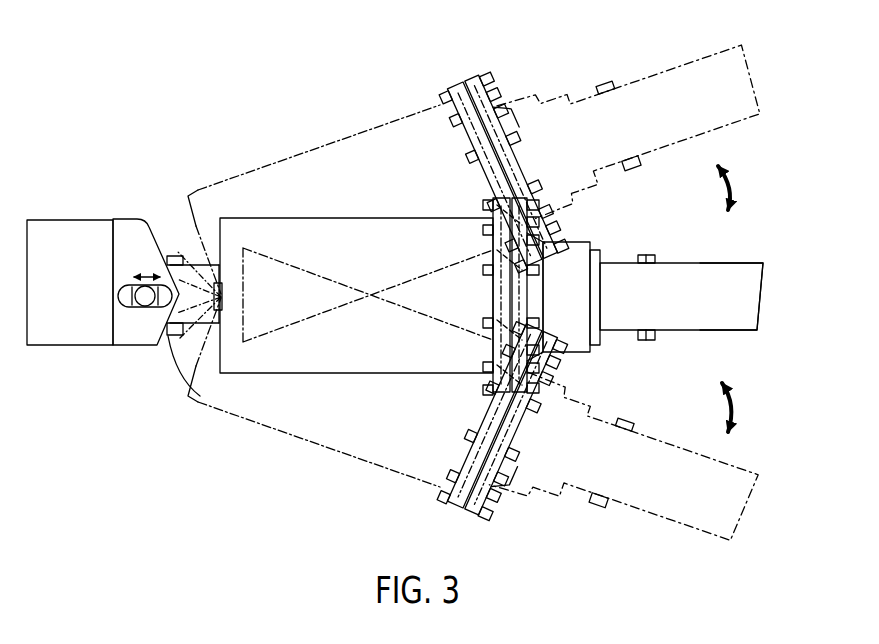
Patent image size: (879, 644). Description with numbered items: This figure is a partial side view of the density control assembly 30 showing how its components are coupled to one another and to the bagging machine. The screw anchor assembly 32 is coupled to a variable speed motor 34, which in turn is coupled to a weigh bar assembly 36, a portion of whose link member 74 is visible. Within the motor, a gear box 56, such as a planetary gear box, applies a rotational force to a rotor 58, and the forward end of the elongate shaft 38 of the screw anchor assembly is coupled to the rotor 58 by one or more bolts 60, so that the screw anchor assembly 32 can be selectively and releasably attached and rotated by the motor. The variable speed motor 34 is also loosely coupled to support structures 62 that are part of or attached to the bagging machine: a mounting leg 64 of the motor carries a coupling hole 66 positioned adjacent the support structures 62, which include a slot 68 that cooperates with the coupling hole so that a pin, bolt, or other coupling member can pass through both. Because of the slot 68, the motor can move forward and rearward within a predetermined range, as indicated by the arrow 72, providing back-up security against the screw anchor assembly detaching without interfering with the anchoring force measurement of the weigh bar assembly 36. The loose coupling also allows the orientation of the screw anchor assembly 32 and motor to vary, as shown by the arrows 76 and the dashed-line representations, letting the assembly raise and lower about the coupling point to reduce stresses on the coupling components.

The density control assembly 30 is at (167, 96).
The screw anchor assembly 32 is at (715, 291).
The variable speed motor 34 is at (365, 198).
The weigh bar assembly 36 is at (80, 182).
The elongate shaft 38 is at (718, 318).
The gear box 56 is at (330, 354).
The rotor 58 is at (616, 243).
The bolts 60 is at (646, 256).
The support structures 62 is at (97, 335).
The mounting leg 64 is at (195, 326).
The coupling hole 66 is at (158, 310).
The slot 68 is at (128, 288).
The arrow 72 is at (150, 270).
The link member 74 is at (168, 256).
The arrows 76 is at (734, 184).